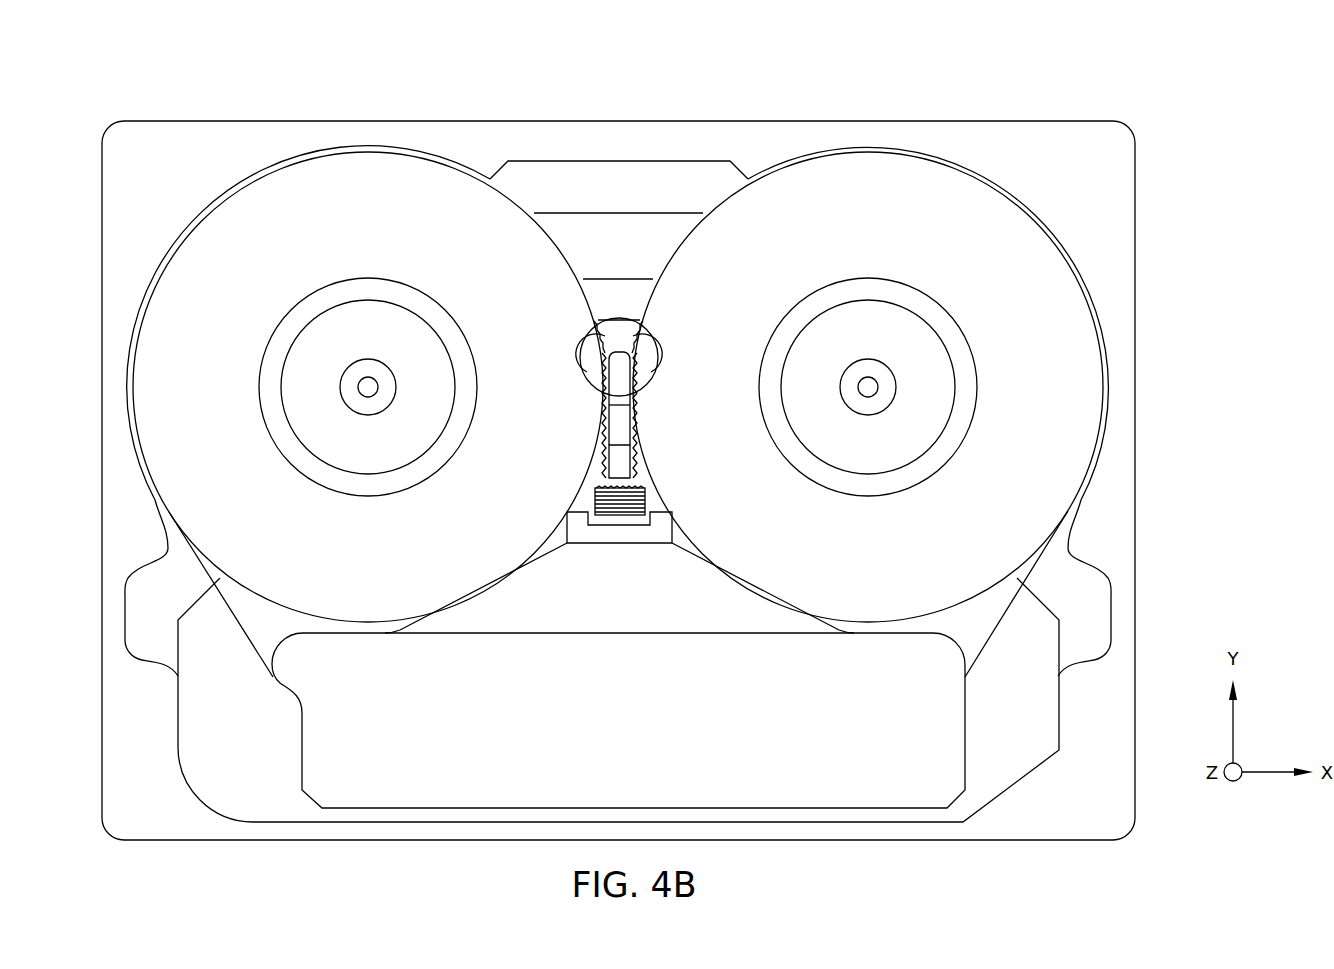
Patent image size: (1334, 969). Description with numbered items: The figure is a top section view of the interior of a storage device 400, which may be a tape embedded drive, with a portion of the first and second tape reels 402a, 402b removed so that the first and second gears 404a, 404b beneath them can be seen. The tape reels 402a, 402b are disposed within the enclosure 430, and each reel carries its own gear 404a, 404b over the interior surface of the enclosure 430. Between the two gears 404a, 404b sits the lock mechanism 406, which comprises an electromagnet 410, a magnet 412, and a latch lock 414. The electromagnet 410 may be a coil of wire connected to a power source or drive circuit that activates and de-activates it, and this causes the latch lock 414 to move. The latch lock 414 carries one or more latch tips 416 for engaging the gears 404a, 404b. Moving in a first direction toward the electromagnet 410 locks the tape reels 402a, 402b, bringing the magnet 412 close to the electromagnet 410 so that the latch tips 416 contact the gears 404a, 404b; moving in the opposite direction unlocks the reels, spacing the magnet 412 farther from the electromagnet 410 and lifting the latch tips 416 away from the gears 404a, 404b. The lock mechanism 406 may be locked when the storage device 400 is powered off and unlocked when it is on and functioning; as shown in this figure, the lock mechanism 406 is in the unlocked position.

The storage device 400 is at (228, 88).
The enclosure 430 is at (585, 130).
The first tape reel 402a is at (492, 522).
The second tape reel 402b is at (783, 522).
The lock mechanism 406 is at (615, 297).
The latch tips 416 is at (598, 318).
The first gear 404a is at (586, 357).
The second gear 404b is at (655, 360).
The latch lock 414 is at (615, 426).
The magnet 412 is at (615, 460).
The electromagnet 410 is at (597, 500).